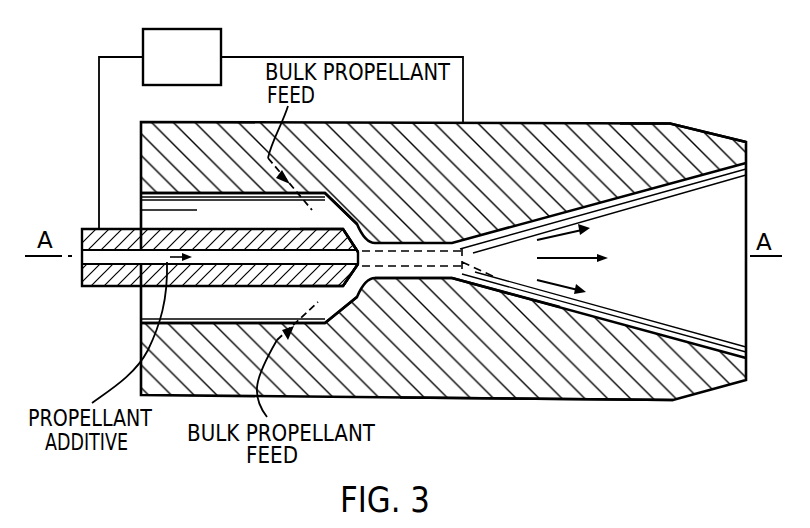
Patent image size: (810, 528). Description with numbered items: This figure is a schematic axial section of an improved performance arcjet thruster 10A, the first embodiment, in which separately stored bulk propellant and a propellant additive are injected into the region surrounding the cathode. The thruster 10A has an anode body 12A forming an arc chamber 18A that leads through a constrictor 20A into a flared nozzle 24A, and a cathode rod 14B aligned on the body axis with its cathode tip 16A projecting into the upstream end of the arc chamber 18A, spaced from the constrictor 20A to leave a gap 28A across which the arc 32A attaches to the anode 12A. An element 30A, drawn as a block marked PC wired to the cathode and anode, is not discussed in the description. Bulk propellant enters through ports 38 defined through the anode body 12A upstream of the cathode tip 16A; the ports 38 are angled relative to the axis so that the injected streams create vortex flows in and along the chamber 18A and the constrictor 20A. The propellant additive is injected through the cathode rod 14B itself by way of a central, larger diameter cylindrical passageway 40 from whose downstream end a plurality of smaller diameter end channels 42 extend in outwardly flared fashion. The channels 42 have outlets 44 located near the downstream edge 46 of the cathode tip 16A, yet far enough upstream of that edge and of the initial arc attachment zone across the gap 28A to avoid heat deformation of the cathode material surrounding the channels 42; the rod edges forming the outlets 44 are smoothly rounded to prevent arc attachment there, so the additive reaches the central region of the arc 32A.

The arcjet thruster 10A is at (629, 82).
The anode body 12A is at (478, 123).
The cathode rod 14B is at (118, 292).
The cathode tip 16A is at (366, 272).
The arc chamber 18A is at (382, 197).
The constrictor 20A is at (478, 312).
The nozzle 24A is at (648, 123).
The gap 28A is at (478, 313).
The power supply 30A is at (216, 28).
The arc 32A is at (552, 259).
The ports 38 is at (314, 207).
The cylindrical passageway 40 is at (189, 259).
The end channels 42 is at (330, 247).
The outlets 44 is at (388, 212).
The downstream edge 46 is at (414, 256).